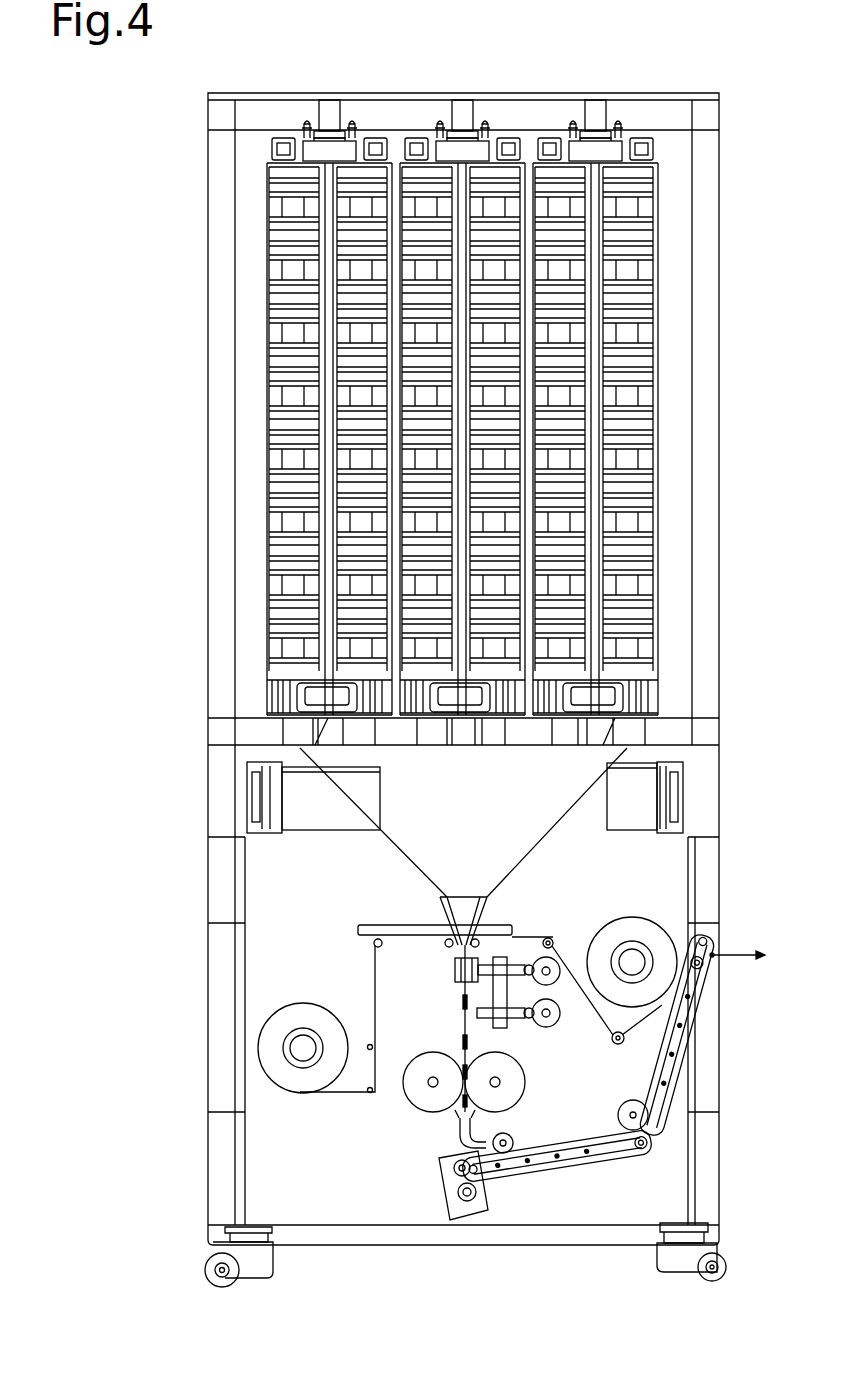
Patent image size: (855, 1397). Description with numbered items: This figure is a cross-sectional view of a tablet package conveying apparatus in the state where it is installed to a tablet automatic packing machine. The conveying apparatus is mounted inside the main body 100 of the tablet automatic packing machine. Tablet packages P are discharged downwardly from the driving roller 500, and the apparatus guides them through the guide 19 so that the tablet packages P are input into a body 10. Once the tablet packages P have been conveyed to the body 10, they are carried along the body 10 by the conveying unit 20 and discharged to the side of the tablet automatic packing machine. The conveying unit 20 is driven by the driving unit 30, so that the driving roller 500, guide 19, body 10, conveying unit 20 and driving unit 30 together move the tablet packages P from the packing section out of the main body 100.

The main body 100 is at (218, 890).
The tablet packages P is at (462, 1000).
The driving roller 500 is at (415, 1088).
The guide 19 is at (452, 1117).
The driving unit 30 is at (467, 1196).
The body 10 is at (547, 1168).
The conveying unit 20 is at (610, 1152).